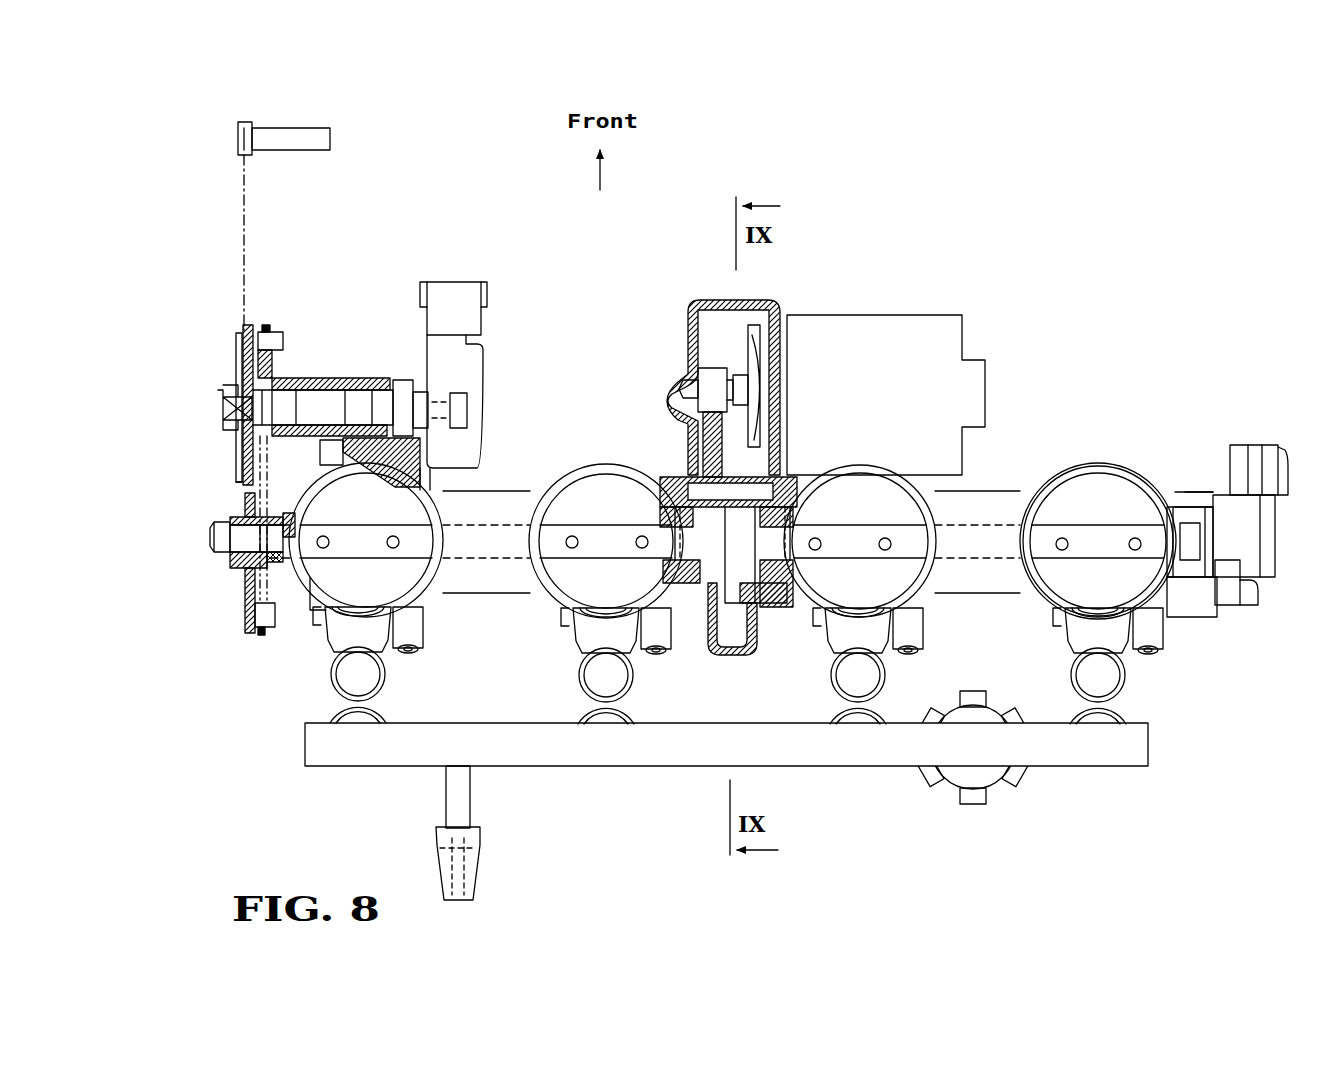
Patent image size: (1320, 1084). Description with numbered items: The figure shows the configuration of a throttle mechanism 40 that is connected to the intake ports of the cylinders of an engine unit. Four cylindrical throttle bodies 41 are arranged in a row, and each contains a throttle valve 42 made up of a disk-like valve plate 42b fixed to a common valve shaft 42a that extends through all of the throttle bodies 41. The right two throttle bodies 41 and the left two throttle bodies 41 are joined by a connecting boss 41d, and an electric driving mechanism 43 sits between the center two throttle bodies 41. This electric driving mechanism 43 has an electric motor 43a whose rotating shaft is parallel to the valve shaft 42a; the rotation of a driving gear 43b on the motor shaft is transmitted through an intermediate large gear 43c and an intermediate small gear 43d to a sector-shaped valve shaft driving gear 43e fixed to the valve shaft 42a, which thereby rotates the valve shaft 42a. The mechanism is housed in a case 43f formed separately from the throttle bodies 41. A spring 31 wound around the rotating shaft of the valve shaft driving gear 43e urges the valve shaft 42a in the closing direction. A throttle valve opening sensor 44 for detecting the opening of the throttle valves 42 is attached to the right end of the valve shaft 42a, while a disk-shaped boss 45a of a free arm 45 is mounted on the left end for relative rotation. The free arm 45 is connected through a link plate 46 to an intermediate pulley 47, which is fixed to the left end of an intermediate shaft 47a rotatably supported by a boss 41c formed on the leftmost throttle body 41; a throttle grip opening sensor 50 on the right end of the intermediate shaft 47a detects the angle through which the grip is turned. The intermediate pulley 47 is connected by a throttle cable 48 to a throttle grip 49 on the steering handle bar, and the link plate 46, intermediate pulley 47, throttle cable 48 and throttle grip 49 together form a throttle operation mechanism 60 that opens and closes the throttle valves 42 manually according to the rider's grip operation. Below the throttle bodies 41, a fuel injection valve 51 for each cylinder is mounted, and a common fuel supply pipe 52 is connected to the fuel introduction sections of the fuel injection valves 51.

The spring 31 is at (708, 612).
The throttle mechanism 40 is at (988, 276).
The throttle body 41 is at (434, 600).
The boss 41c is at (364, 378).
The connecting boss 41d is at (494, 594).
The throttle valve 42 is at (400, 490).
The valve shaft 42a is at (872, 478).
The valve plate 42b is at (407, 517).
The electric driving mechanism 43 is at (791, 466).
The electric motor 43a is at (830, 315).
The driving gear 43b is at (710, 370).
The intermediate large gear 43c is at (700, 424).
The intermediate small gear 43d is at (770, 460).
The valve shaft driving gear 43e is at (744, 437).
The case 43f is at (700, 300).
The throttle valve opening sensor 44 is at (1236, 447).
The free arm 45 is at (240, 606).
The boss 45a is at (243, 515).
The link plate 46 is at (276, 614).
The intermediate pulley 47 is at (236, 350).
The intermediate shaft 47a is at (285, 388).
The throttle cable 48 is at (250, 258).
The throttle grip 49 is at (300, 127).
The throttle grip opening sensor 50 is at (486, 362).
The fuel injection valve 51 is at (340, 678).
The fuel supply pipe 52 is at (388, 760).
The throttle operation mechanism 60 is at (170, 264).